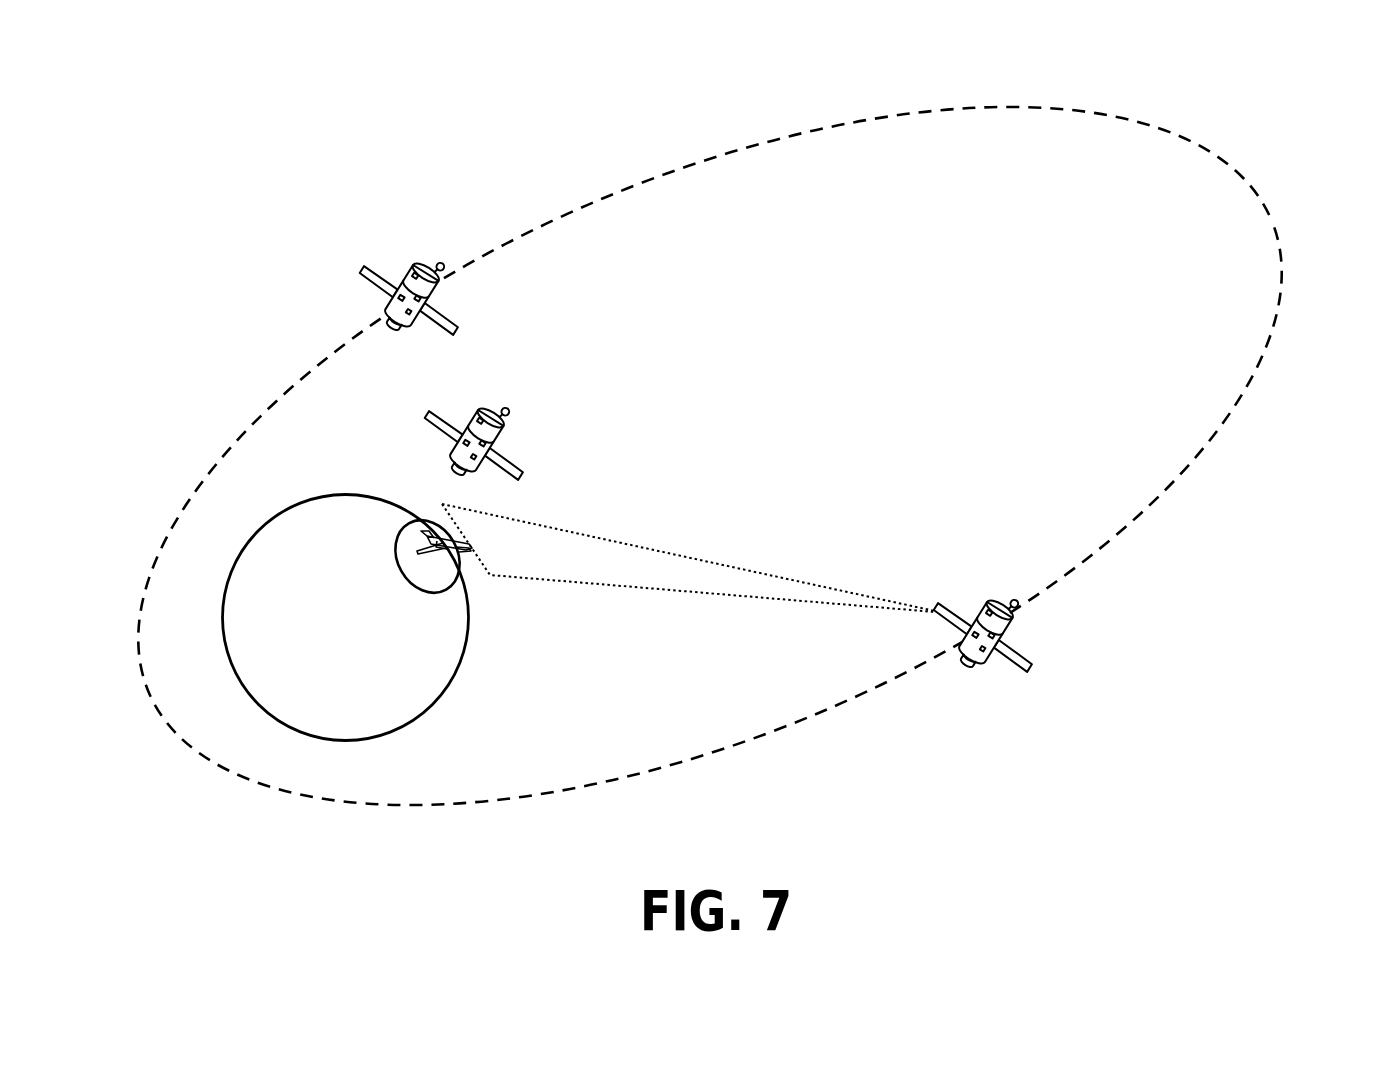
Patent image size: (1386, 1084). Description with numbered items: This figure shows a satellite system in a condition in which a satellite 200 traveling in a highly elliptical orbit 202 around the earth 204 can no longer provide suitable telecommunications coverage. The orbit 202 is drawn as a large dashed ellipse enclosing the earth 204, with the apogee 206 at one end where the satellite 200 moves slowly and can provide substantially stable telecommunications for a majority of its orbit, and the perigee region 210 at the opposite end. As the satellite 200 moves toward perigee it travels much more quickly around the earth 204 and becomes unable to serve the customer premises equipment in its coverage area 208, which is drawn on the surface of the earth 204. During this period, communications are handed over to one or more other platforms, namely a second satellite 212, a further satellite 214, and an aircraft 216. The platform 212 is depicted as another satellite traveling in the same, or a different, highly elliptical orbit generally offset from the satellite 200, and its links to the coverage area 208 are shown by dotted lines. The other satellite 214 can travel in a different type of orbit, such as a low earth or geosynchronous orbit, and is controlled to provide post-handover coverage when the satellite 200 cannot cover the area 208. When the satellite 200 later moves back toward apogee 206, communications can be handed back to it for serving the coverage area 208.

The satellite 200 is at (360, 274).
The highly elliptical orbit 202 is at (745, 149).
The earth 204 is at (436, 700).
The apogee 206 is at (1261, 209).
The coverage area 208 is at (408, 585).
The orbit position / perigee region 210 is at (158, 709).
The platform 212 is at (1030, 667).
The satellite 214 is at (497, 412).
The aircraft 216 is at (424, 536).